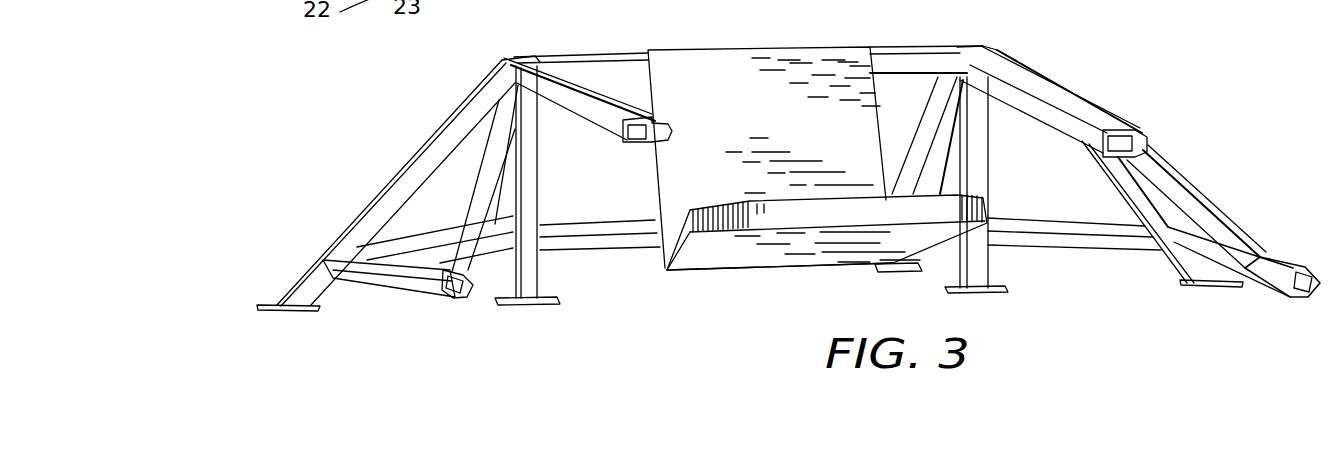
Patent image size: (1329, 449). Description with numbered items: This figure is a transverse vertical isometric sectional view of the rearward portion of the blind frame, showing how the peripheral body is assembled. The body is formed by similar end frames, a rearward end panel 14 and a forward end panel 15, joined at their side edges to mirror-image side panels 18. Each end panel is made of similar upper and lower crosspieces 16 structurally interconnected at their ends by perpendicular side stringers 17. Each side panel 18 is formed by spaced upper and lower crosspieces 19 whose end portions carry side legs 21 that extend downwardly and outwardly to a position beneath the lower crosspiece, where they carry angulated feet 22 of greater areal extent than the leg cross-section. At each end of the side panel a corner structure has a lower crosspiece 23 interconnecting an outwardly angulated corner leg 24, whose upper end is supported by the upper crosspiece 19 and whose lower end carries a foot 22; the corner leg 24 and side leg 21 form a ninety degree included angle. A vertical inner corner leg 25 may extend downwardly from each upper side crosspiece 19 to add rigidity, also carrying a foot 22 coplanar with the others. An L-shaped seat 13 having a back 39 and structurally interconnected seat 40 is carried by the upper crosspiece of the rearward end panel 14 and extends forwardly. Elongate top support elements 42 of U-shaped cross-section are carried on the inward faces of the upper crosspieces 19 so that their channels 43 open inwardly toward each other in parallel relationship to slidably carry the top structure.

The seat 13 is at (699, 290).
The rearward end panel 14 is at (592, 276).
The forward end panel 15 is at (436, 90).
The crosspiece 16 is at (640, 230).
The side stringer 17 is at (495, 225).
The side panel 18 is at (400, 313).
The crosspiece 19 is at (444, 296).
The side leg 21 is at (304, 297).
The foot 22 is at (265, 308).
The lower crosspiece 23 is at (407, 252).
The corner leg 24 is at (477, 177).
The inner corner leg 25 is at (527, 176).
The back 39 is at (787, 133).
The seat 40 is at (807, 233).
The top support element 42 is at (607, 91).
The channel 43 is at (667, 130).